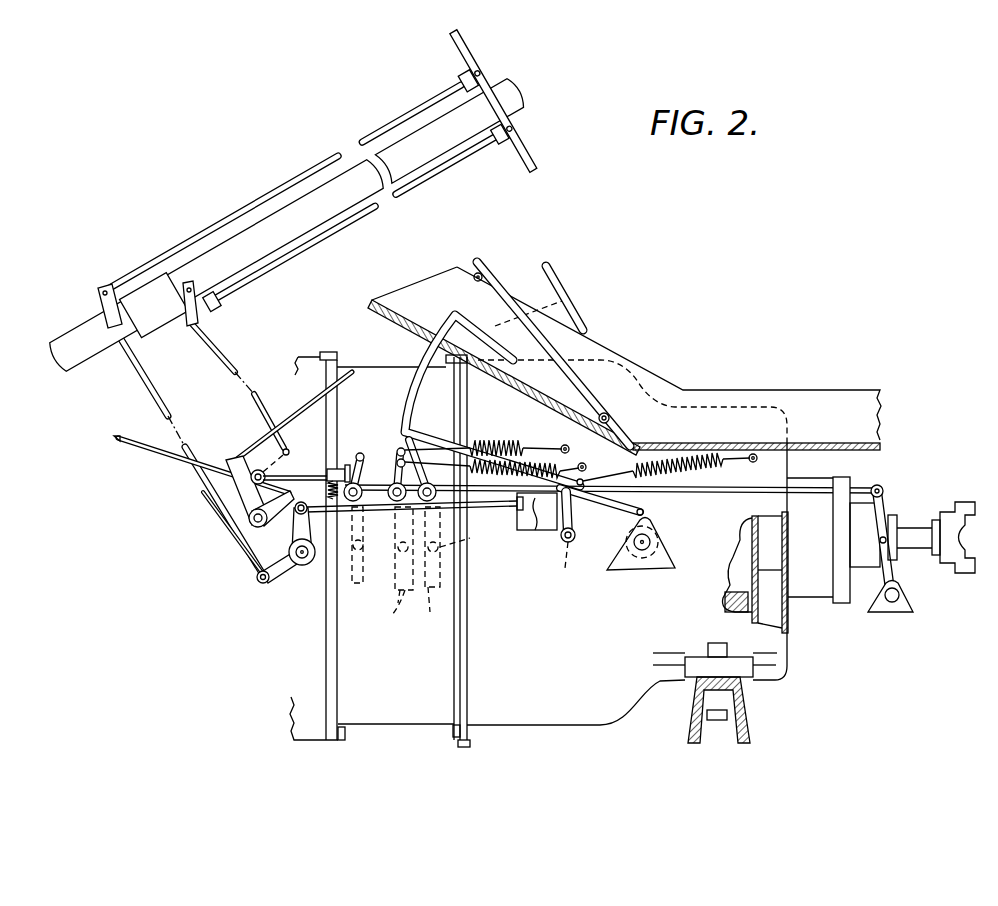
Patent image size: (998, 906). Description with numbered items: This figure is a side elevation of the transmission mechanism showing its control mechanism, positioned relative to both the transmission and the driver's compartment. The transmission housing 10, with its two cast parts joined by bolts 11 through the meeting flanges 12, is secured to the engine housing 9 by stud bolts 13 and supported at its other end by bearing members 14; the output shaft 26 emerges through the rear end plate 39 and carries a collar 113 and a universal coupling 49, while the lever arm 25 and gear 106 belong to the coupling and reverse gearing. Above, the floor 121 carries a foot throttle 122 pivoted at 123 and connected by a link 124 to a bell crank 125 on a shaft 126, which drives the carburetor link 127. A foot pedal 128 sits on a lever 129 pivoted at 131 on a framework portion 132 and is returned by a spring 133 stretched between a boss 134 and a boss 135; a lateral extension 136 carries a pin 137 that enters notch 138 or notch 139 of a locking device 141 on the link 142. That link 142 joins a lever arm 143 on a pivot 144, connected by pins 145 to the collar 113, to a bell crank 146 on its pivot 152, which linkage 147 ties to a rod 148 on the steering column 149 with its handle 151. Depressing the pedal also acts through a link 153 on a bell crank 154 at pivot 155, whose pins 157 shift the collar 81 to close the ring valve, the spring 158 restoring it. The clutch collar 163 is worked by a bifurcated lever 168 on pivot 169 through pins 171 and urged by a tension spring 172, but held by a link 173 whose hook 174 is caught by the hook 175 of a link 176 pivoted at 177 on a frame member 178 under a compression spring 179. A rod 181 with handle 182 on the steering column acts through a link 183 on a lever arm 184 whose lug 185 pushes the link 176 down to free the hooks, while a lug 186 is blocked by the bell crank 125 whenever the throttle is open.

The engine housing 9 is at (311, 742).
The housing 10 is at (420, 726).
The bolts 11 is at (453, 736).
The flanges 12 is at (466, 749).
The stud bolts 13 is at (344, 740).
The bearing members 14 is at (750, 713).
The lever arm 25 is at (364, 542).
The output shaft 26 is at (918, 535).
The rear end plate 39 is at (786, 625).
The universal coupling 49 is at (958, 510).
The collar 81 is at (398, 604).
The gear 106 is at (724, 604).
The collar 113 is at (898, 518).
The floor 121 is at (828, 446).
The foot throttle 122 is at (483, 262).
The pivot 123 is at (606, 413).
The link 124 is at (392, 312).
The bell crank 125 is at (249, 515).
The shaft 126 is at (232, 521).
The link 127 is at (137, 446).
The foot pedal 128 is at (440, 302).
The lever 129 is at (428, 384).
The pivot 131 is at (651, 542).
The portion of framework 132 is at (668, 570).
The spring 133 is at (697, 447).
The boss 134 is at (583, 481).
The boss 135 is at (752, 462).
The lateral extension 136 is at (570, 542).
The pin 137 is at (565, 552).
The notch 138 is at (533, 535).
The notch 139 is at (610, 517).
The locking device 141 is at (520, 522).
The link 142 is at (701, 496).
The lever arm 143 is at (884, 494).
The pivot 144 is at (893, 613).
The pins 145 is at (895, 549).
The bell crank 146 is at (293, 530).
The linkage 147 is at (155, 392).
The rod 148 is at (270, 212).
The steering column 149 is at (405, 135).
The handle 151 is at (472, 50).
The pivot 152 is at (303, 563).
The link 153 is at (492, 505).
The bell crank 154 is at (400, 448).
The pivot 155 is at (390, 493).
The pins 157 is at (398, 586).
The spring 158 is at (493, 440).
The collar 163 is at (430, 604).
The bifurcated lever 168 is at (418, 462).
The pivot 169 is at (455, 490).
The pins 171 is at (448, 544).
The tension spring 172 is at (553, 460).
The link 173 is at (338, 467).
The hook 174 is at (312, 458).
The hook 175 is at (349, 464).
The link 176 is at (326, 474).
The pivot 177 is at (256, 470).
The frame member 178 is at (236, 484).
The compression spring 179 is at (363, 458).
The rod 181 is at (375, 208).
The handle 182 is at (526, 151).
The link 183 is at (225, 346).
The lever arm 184 is at (290, 428).
The lug 185 is at (262, 445).
The lug 186 is at (292, 482).